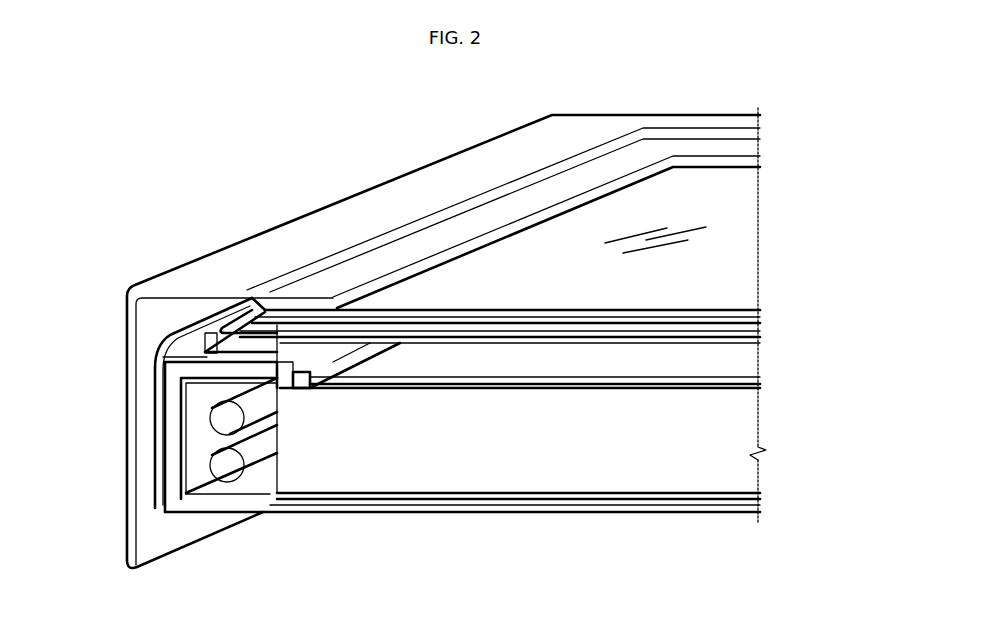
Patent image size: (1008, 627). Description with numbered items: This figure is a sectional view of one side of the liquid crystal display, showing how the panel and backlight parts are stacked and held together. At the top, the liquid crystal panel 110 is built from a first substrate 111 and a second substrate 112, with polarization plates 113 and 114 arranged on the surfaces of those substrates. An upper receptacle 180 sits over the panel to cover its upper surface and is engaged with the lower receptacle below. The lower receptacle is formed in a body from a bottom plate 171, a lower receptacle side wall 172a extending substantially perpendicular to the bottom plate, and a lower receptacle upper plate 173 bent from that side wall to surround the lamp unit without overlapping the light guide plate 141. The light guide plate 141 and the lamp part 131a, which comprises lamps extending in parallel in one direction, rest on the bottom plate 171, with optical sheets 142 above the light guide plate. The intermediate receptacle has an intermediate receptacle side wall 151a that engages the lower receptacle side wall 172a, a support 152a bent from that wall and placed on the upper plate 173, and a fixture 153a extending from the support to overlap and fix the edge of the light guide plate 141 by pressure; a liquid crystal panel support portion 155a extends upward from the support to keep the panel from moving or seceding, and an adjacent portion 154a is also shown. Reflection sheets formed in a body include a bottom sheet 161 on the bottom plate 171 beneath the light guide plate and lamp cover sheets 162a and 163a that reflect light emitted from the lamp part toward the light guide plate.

The liquid crystal panel 110 is at (574, 263).
The first substrate 111 is at (760, 331).
The second substrate 112 is at (760, 322).
The polarization plate 113 is at (760, 339).
The polarization plate 114 is at (760, 316).
The lamp part 131a is at (240, 420).
The light guide plate 141 is at (752, 423).
The optical sheets 142 is at (760, 385).
The intermediate receptacle side wall 151a is at (150, 397).
The support 152a is at (220, 357).
The fixture 153a is at (320, 358).
The fourth support portion 154a is at (277, 352).
The liquid crystal panel support portion 155a is at (180, 340).
The bottom sheet 161 is at (760, 494).
The lamp cover sheet 162a is at (180, 470).
The lamp cover sheet 163a is at (250, 470).
The bottom plate 171 is at (760, 505).
The lower receptacle side wall 172a is at (173, 448).
The lower receptacle upper plate 173 is at (207, 418).
The upper receptacle 180 is at (183, 297).